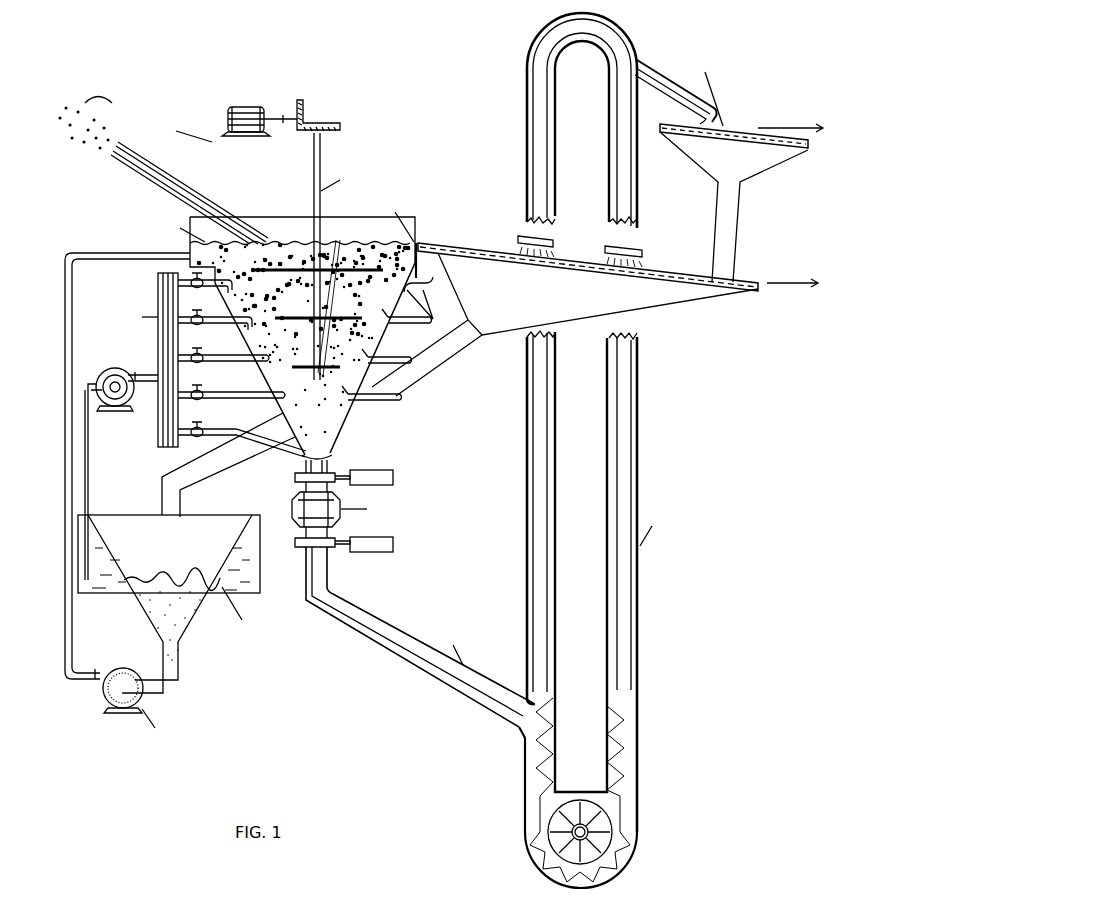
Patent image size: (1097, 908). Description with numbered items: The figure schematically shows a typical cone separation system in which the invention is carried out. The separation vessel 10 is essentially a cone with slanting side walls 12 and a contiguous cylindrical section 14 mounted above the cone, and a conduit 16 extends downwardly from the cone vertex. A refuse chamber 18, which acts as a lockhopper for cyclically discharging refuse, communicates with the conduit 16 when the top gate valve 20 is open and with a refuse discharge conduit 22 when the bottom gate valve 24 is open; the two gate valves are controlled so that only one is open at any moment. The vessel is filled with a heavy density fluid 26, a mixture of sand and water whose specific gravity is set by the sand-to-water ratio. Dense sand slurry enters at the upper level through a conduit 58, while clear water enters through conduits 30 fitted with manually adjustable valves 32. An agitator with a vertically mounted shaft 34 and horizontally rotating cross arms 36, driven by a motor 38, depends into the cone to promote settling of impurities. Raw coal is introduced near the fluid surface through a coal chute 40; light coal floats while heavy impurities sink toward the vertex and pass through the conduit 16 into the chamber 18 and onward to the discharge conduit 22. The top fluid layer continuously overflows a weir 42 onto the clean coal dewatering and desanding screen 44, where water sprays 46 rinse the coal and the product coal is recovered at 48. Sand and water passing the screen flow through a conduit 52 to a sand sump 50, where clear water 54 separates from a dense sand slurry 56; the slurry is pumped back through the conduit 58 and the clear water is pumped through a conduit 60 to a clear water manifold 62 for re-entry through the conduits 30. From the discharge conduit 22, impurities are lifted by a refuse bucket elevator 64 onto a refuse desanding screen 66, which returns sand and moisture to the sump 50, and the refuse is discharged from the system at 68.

The separation vessel 10 is at (325, 338).
The slanting side walls 12 is at (343, 418).
The cylindrical section 14 is at (426, 283).
The conduit 16 is at (335, 462).
The refuse chamber 18 is at (291, 503).
The top gate valve 20 is at (395, 473).
The refuse discharge conduit 22 is at (413, 667).
The bottom gate valve 24 is at (401, 539).
The heavy density fluid 26 is at (355, 265).
The conduits 30 is at (214, 283).
The manually adjustable valves 32 is at (208, 303).
The agitator shaft 34 is at (314, 206).
The agitating cross arms 36 is at (336, 252).
The motor 38 is at (239, 106).
The coal chute 40 is at (219, 201).
The weir 42 is at (418, 262).
The clean coal dewatering and desanding screen 44 is at (590, 259).
The water sprays 46 is at (526, 236).
The product coal 48 is at (784, 256).
The sand sump 50 is at (228, 514).
The conduit 52 is at (441, 352).
The clear water 54 is at (117, 587).
The dense sand slurry 56 is at (180, 637).
The conduit 58 is at (72, 644).
The conduit 60 is at (93, 478).
The clear water manifold 62 is at (158, 303).
The refuse bucket elevator 64 is at (614, 756).
The refuse desanding screen 66 is at (731, 127).
The refuse discharge 68 is at (788, 112).